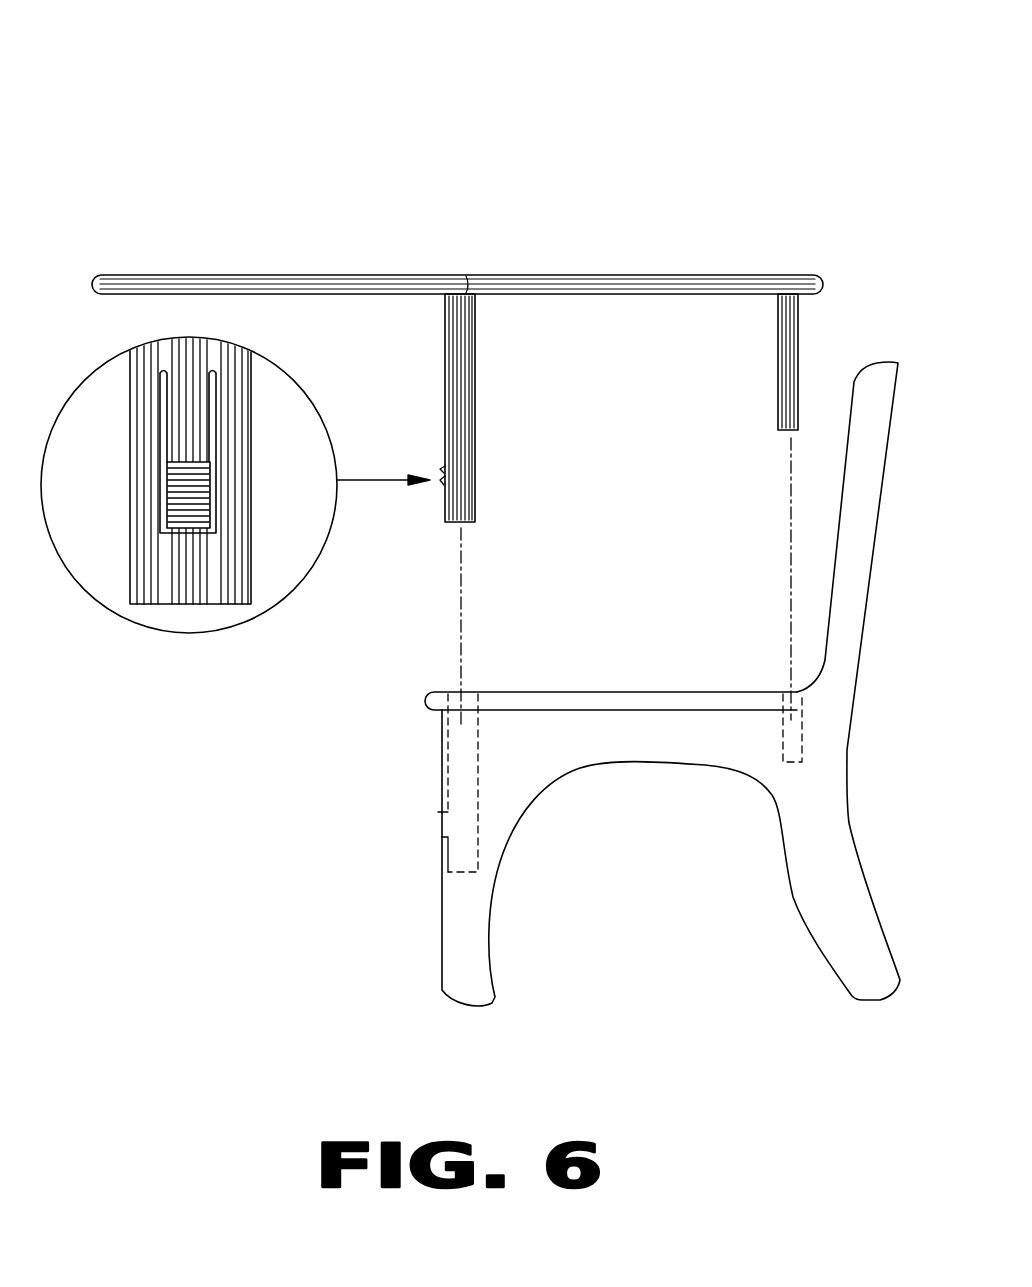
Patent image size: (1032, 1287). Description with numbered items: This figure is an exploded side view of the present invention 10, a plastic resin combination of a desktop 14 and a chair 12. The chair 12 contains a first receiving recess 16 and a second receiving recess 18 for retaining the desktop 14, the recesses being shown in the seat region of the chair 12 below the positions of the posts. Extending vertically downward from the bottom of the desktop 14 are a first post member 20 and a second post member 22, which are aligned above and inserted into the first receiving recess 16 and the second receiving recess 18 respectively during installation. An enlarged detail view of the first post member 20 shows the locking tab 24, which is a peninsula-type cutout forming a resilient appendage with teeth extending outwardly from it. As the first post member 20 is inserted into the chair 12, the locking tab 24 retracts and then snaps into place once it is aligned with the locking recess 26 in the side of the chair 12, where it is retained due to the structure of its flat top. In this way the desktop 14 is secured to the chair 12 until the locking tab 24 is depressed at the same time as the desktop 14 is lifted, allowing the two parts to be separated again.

The present invention 10 is at (705, 180).
The chair 12 is at (633, 742).
The desktop 14 is at (562, 275).
The first receiving recess 16 is at (455, 693).
The second receiving recess 18 is at (787, 690).
The first post member 20 is at (475, 349).
The second post member 22 is at (778, 375).
The locking tab 24 is at (197, 485).
The locking recess 26 is at (437, 810).